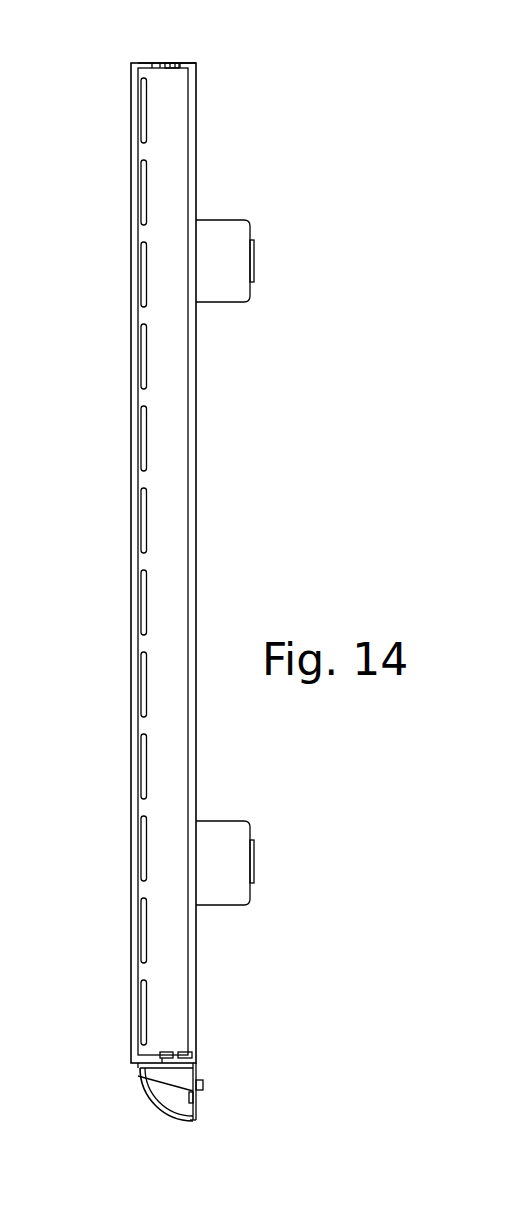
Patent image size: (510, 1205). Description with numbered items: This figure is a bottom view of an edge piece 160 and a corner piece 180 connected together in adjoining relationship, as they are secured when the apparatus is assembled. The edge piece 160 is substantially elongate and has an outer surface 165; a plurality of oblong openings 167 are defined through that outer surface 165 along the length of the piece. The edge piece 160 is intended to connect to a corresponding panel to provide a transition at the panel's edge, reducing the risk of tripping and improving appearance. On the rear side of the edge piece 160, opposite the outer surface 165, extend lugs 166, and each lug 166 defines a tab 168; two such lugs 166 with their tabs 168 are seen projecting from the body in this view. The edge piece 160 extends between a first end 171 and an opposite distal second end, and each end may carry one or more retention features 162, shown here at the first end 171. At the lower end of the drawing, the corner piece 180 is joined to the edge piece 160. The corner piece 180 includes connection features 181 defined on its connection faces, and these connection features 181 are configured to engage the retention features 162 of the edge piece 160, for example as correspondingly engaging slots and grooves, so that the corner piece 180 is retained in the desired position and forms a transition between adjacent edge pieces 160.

The edge piece 160 is at (180, 587).
The retention feature 162 is at (172, 64).
The outer surface 165 is at (130, 562).
The lug 166 is at (256, 211).
The opening 167 is at (146, 763).
The tab 168 is at (256, 260).
The first end 171 is at (147, 60).
The corner piece 180 is at (230, 1121).
The connection feature 181 is at (200, 1065).